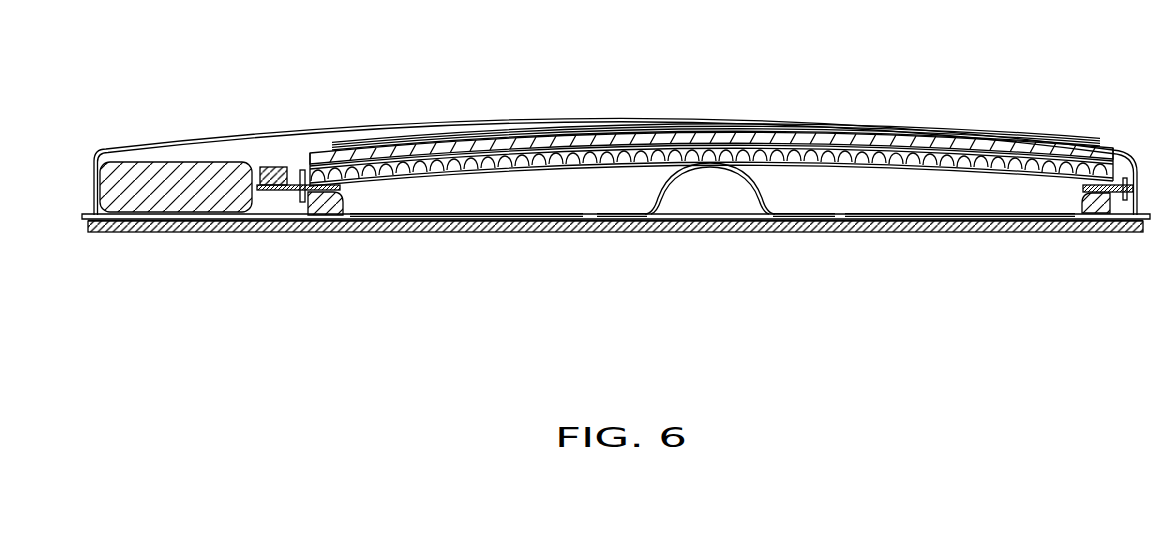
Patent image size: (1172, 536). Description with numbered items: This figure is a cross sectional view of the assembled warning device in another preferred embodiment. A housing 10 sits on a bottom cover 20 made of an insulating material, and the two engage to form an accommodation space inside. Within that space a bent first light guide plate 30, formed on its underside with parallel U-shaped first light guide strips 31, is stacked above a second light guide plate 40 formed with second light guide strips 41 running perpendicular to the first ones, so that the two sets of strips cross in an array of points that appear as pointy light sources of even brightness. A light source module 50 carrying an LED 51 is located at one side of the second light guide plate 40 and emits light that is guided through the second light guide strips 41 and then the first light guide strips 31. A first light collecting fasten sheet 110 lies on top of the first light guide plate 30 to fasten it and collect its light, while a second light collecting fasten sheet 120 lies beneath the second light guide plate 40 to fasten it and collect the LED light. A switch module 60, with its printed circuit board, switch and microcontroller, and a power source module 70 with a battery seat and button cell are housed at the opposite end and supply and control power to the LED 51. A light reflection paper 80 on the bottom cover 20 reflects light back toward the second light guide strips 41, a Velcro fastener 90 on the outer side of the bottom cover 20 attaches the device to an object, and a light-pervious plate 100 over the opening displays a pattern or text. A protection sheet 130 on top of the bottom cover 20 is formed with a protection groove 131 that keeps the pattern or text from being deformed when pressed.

The housing 10 is at (233, 130).
The bottom cover 20 is at (1012, 218).
The first light guide plate 30 is at (637, 133).
The first light guide strips 31 is at (688, 130).
The second light guide plate 40 is at (582, 160).
The second light guide strips 41 is at (525, 167).
The light source module 50 is at (1130, 157).
The LED 51 is at (1097, 200).
The switch module 60 is at (303, 170).
The power source module 70 is at (180, 187).
The light reflection paper 80 is at (900, 214).
The Velcro fastener 90 is at (803, 215).
The light-pervious plate 100 is at (818, 125).
The first light collecting fasten sheet 110 is at (570, 128).
The second light collecting fasten sheet 120 is at (627, 165).
The protection sheet 130 is at (953, 221).
The protection groove 131 is at (748, 177).